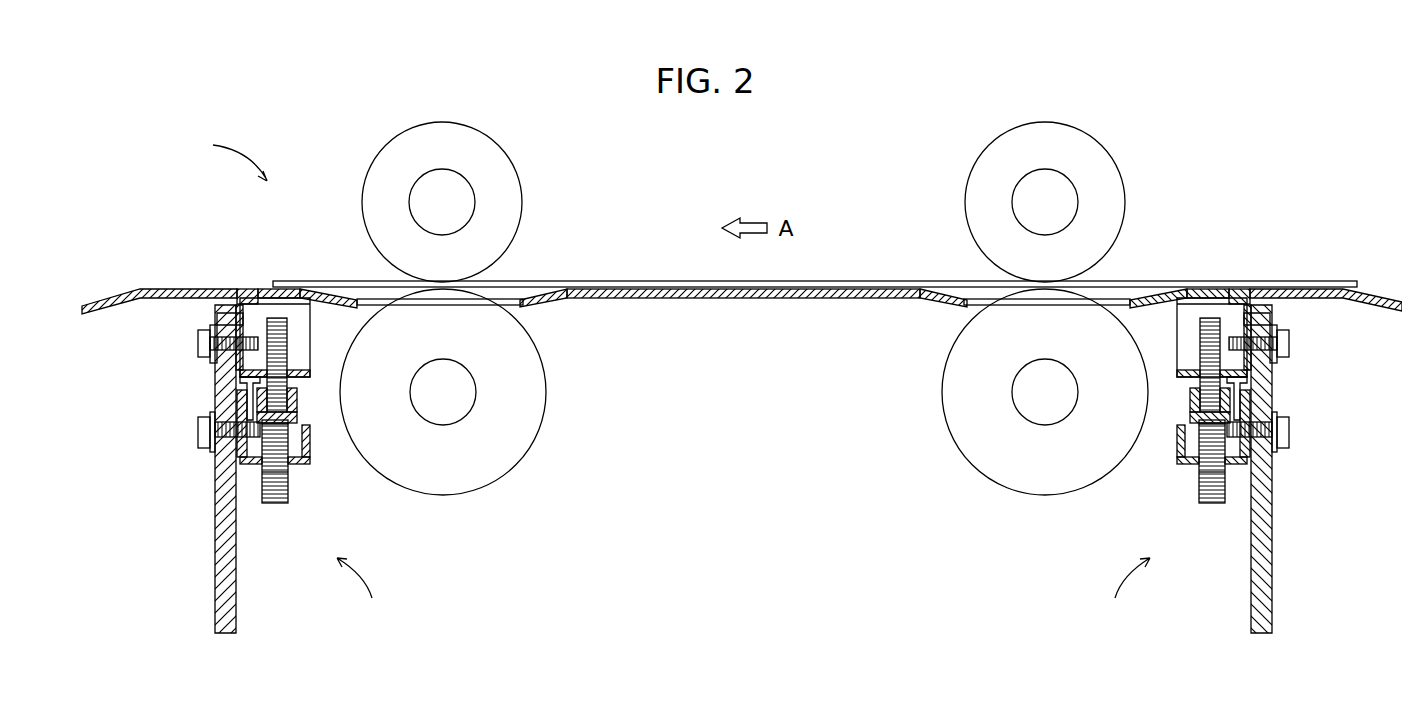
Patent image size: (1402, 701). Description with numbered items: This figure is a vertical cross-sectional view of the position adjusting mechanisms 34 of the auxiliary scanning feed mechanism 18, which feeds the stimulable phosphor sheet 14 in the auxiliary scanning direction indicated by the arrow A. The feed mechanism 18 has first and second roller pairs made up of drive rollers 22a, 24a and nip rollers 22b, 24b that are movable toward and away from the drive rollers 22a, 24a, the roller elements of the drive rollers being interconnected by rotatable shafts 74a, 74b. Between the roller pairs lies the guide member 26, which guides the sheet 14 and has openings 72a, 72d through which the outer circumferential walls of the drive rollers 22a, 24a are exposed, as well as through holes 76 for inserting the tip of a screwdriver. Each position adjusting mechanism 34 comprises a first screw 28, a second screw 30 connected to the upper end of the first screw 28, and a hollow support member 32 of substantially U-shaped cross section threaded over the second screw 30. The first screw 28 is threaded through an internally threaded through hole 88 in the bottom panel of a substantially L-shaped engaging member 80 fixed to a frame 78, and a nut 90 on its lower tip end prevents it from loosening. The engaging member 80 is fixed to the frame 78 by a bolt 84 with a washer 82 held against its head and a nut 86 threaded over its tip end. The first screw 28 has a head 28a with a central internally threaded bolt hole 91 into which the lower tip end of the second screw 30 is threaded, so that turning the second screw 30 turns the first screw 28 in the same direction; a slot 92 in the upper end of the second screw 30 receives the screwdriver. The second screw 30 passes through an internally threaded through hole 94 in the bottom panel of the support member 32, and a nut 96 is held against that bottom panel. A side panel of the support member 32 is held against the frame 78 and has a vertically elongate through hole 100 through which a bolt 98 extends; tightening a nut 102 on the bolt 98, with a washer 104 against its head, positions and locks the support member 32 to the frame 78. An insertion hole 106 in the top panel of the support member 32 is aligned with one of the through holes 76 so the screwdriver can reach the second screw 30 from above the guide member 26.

The stimulable phosphor sheet 14 is at (711, 289).
The auxiliary scanning feed mechanism 18 is at (179, 160).
The drive roller 22a is at (1046, 485).
The nip roller 22b is at (1046, 128).
The drive roller 24a is at (439, 485).
The nip roller 24b is at (439, 128).
The guide member 26 is at (746, 298).
The first screw 28 is at (277, 503).
The head 28a is at (292, 421).
The second screw 30 is at (290, 338).
The support member 32 is at (337, 289).
The position adjusting mechanism 34 is at (743, 592).
The opening 72a is at (522, 296).
The opening 72d is at (965, 296).
The rotatable shaft 74a is at (1030, 392).
The rotatable shaft 74b is at (455, 392).
The through hole 76 is at (292, 289).
The frame 78 is at (222, 615).
The engaging member 80 is at (310, 458).
The washer 82 is at (212, 448).
The bolt 84 is at (200, 432).
The nut 86 is at (237, 410).
The through hole 88 is at (284, 472).
The nut 90 is at (258, 466).
The bolt hole 91 is at (285, 410).
The slot 92 is at (283, 318).
The through hole 94 is at (282, 392).
The nut 96 is at (300, 372).
The bolt 98 is at (200, 344).
The through hole 100 is at (225, 322).
The nut 102 is at (212, 362).
The washer 104 is at (217, 318).
The insertion hole 106 is at (259, 290).